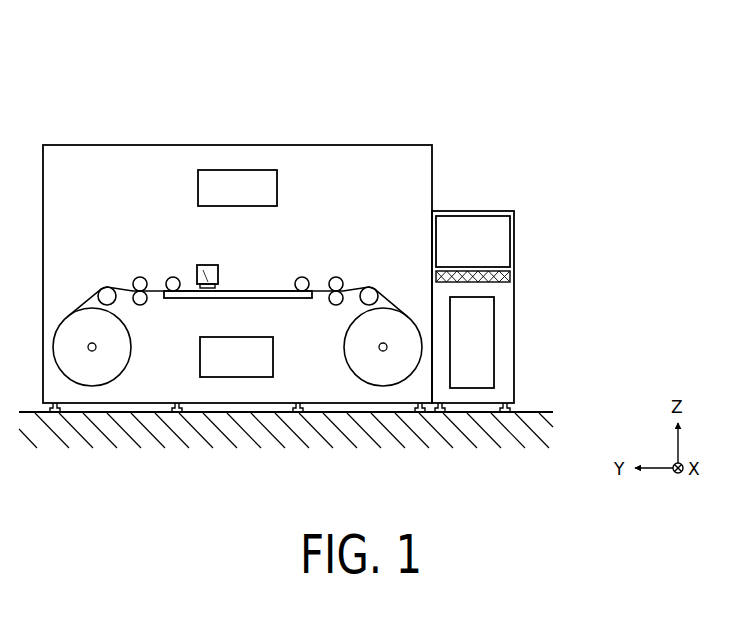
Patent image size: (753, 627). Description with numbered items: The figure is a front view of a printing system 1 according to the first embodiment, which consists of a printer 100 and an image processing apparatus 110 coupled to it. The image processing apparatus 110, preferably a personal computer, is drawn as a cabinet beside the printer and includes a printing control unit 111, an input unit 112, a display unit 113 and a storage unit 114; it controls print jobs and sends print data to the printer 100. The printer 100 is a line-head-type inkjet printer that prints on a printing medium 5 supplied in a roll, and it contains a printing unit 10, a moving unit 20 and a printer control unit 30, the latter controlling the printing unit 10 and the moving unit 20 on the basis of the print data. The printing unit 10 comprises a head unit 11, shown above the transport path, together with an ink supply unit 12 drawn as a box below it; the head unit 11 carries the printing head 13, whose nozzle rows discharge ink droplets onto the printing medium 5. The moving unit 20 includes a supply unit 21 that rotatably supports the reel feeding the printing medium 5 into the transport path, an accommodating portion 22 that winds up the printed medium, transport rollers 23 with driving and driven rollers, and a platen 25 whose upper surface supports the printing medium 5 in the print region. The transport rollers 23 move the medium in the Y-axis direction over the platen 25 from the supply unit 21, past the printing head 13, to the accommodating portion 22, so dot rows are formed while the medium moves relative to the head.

The printing system 1 is at (476, 80).
The printer 100 is at (74, 120).
The printing unit 10 is at (244, 257).
The head unit 11 is at (209, 265).
The printing head 13 is at (203, 283).
The ink supply unit 12 is at (200, 350).
The moving unit 20 is at (122, 230).
The supply unit 21 is at (338, 363).
The accommodating portion 22 is at (135, 369).
The transport roller 23 is at (172, 277).
The platen 25 is at (244, 299).
The printing medium 5 is at (352, 291).
The printer control unit 30 is at (277, 183).
The image processing apparatus 110 is at (481, 198).
The printing control unit 111 is at (546, 342).
The input unit 112 is at (505, 275).
The display unit 113 is at (500, 238).
The storage unit 114 is at (487, 340).